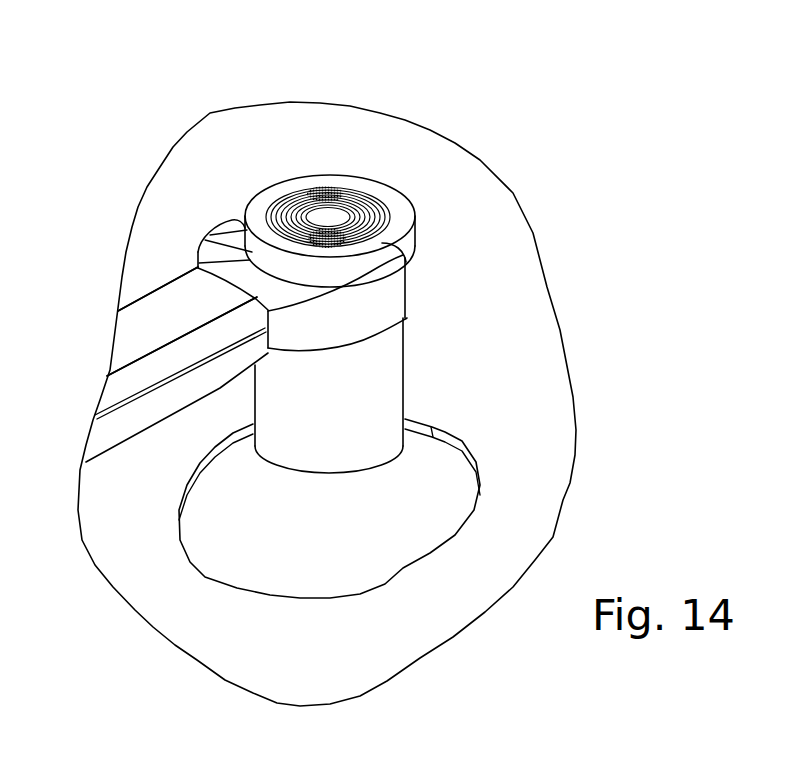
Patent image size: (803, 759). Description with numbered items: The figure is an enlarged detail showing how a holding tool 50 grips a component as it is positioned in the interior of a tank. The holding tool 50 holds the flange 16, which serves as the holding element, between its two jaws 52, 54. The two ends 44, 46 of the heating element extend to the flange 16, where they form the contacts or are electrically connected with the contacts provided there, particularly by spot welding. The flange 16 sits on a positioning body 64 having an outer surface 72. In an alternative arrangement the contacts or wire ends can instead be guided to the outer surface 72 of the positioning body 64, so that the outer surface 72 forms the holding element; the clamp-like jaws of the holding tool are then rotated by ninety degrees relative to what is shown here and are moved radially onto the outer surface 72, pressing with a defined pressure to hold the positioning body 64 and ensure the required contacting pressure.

The end of the heating element 44 is at (256, 182).
The holding tool 50 is at (162, 274).
The jaw 54 is at (143, 334).
The jaw 52 is at (130, 423).
The end of the heating element 46 is at (408, 262).
The flange 16 is at (387, 317).
The outer surface 72 is at (388, 383).
The positioning body 64 is at (410, 457).